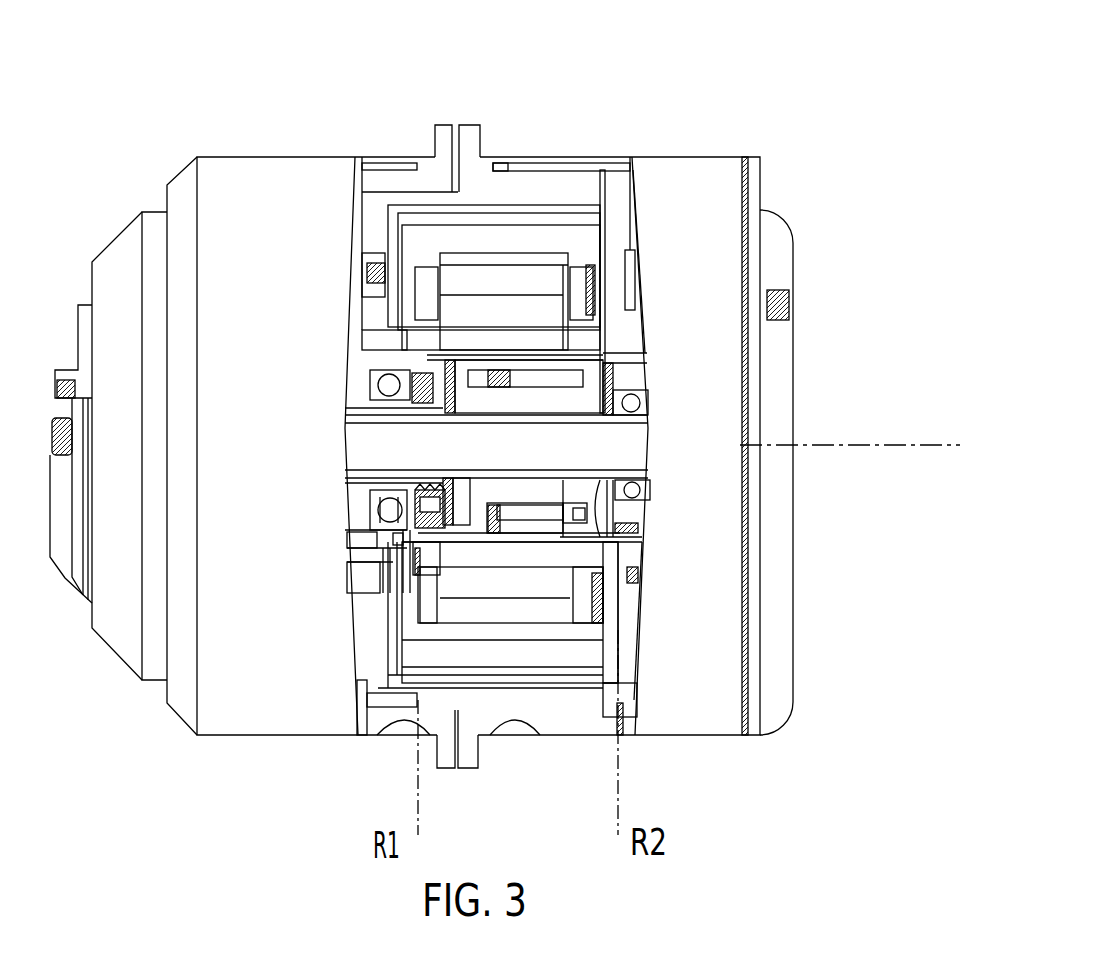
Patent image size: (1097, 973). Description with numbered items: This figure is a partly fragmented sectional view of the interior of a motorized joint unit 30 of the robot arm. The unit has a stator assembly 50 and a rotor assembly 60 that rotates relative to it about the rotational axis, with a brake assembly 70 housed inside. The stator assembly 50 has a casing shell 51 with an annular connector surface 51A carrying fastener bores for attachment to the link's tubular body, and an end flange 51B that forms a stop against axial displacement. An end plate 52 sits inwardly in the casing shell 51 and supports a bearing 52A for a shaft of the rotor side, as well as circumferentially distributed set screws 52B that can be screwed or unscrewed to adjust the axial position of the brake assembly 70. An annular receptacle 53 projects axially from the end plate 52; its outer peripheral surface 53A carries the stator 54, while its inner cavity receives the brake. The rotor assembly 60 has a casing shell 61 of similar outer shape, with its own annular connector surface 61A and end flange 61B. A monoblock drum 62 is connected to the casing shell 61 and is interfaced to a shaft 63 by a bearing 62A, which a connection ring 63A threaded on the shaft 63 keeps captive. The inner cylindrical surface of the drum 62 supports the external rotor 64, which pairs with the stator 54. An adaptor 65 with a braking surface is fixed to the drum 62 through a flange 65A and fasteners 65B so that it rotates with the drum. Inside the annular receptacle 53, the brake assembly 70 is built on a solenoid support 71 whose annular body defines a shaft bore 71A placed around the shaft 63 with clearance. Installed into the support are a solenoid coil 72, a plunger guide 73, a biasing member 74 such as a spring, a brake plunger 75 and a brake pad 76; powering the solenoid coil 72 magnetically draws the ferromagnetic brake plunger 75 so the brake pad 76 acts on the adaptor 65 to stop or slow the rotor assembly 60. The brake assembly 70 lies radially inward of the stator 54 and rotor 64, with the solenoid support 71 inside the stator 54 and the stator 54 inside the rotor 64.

The motorized joint unit 30 is at (130, 155).
The stator assembly 50 is at (588, 140).
The casing shell 51 is at (683, 167).
The annular connector surface 51A is at (513, 157).
The end flange 51B is at (463, 123).
The end plate 52 is at (613, 245).
The bearing 52A is at (632, 410).
The set screws 52B is at (607, 383).
The annular receptacle 53 is at (580, 353).
The outer peripheral surface 53A is at (552, 347).
The stator 54 is at (512, 317).
The rotor assembly 60 is at (385, 142).
The casing shell 61 is at (252, 228).
The annular connector surface 61A is at (410, 157).
The end flange 61B is at (447, 123).
The drum 62 is at (575, 217).
The bearing 62A is at (390, 513).
The shaft 63 is at (373, 470).
The connection ring 63A is at (427, 508).
The external rotor 64 is at (520, 259).
The adaptor 65 is at (433, 362).
The flange 65A is at (408, 323).
The fasteners 65B is at (415, 335).
The brake assembly 70 is at (613, 513).
The solenoid support 71 is at (640, 505).
The shaft bore 71A is at (580, 473).
The solenoid coil 72 is at (613, 517).
The plunger guide 73 is at (560, 512).
The biasing member 74 is at (507, 527).
The brake plunger 75 is at (478, 527).
The brake pad 76 is at (455, 530).